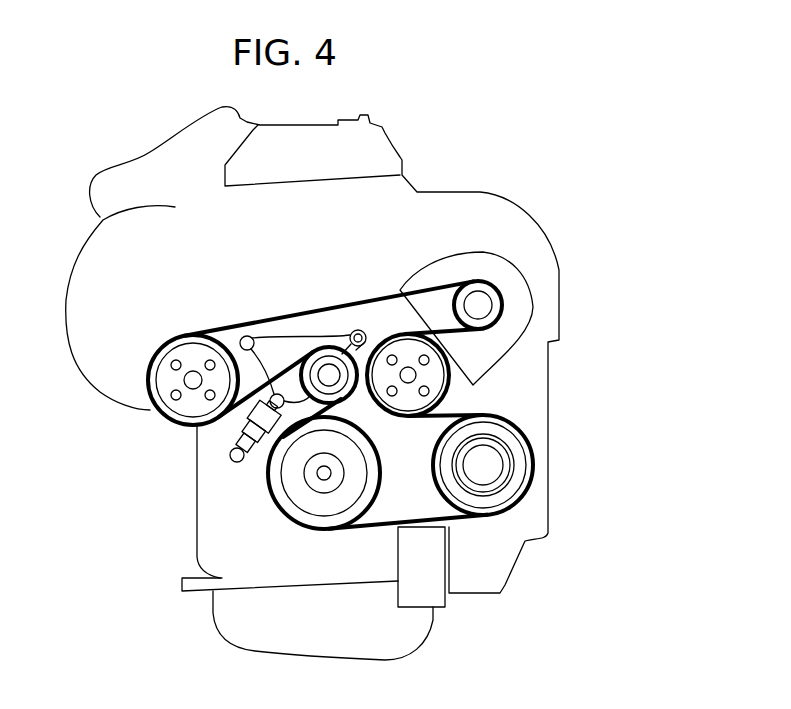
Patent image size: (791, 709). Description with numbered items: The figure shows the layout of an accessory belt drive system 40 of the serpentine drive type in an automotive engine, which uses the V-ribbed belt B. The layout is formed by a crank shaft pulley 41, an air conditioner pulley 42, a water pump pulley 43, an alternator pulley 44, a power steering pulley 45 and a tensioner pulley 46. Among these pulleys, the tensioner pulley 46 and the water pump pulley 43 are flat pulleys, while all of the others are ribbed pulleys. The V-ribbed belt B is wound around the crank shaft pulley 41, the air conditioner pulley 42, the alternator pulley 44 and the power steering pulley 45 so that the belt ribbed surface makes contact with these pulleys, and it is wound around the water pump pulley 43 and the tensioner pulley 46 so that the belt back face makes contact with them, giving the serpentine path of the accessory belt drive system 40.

The accessory belt drive system 40 is at (128, 139).
The crank shaft pulley 41 is at (286, 513).
The air conditioner pulley 42 is at (527, 463).
The water pump pulley 43 is at (440, 397).
The alternator pulley 44 is at (503, 305).
The power steering pulley 45 is at (168, 411).
The tensioner pulley 46 is at (329, 347).
The V-ribbed belt B is at (459, 522).